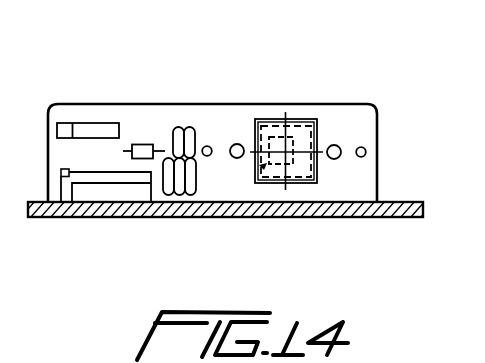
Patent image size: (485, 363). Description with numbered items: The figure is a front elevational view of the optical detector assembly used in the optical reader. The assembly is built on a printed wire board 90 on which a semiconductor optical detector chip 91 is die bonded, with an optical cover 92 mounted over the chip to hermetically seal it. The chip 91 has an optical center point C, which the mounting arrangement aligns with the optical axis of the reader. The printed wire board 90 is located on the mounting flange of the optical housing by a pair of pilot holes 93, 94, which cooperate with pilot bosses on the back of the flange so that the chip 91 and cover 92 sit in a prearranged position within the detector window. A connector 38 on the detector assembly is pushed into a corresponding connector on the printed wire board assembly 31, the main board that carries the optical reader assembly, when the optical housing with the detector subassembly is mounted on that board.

The printed wire board 90 is at (155, 117).
The pilot hole 94 is at (230, 140).
The optical cover 92 is at (265, 123).
The semiconductor optical detector chip 91 is at (313, 131).
The optical center point C is at (292, 142).
The pilot hole 93 is at (337, 142).
The printed wire board assembly 31 is at (398, 200).
The connector 38 is at (80, 197).